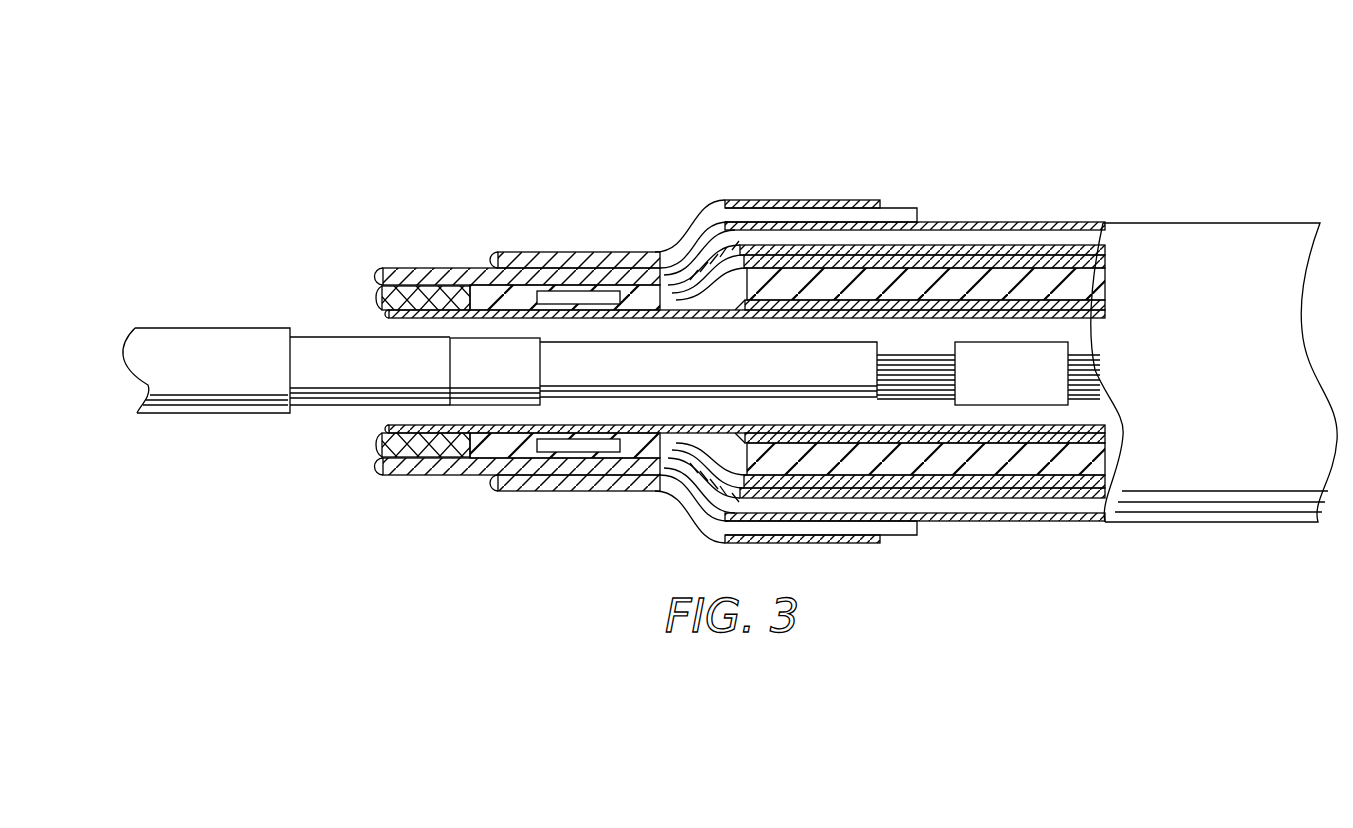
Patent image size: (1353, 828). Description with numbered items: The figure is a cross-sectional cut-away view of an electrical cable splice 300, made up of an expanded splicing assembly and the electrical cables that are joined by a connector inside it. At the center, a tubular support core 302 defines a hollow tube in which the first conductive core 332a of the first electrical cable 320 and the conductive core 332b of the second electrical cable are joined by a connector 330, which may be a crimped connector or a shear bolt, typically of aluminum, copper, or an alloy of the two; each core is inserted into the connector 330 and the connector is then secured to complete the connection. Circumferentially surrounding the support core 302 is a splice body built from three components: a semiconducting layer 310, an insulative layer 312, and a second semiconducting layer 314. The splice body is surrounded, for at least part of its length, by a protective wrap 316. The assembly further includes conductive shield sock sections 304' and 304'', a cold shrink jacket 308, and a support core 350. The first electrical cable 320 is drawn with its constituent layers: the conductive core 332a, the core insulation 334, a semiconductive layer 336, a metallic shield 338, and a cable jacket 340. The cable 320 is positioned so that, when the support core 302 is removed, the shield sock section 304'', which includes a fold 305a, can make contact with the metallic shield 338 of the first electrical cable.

The electrical cable splice 300 is at (1228, 108).
The tubular support core 302 is at (530, 302).
The conductive shield sock section 304' is at (922, 337).
The conductive shield sock section 304'' is at (518, 484).
The fold 305a is at (378, 290).
The cold shrink jacket 308 is at (865, 205).
The semiconducting layer 310 is at (598, 315).
The insulative layer 312 is at (748, 288).
The second semiconducting layer 314 is at (803, 307).
The protective wrap 316 is at (985, 255).
The first electrical cable 320 is at (131, 338).
The connector 330 is at (1057, 350).
The first conductive core 332a is at (922, 400).
The conductive core 332b is at (1088, 400).
The core insulation 334 is at (672, 362).
The semiconductive layer 336 is at (472, 350).
The metallic shield 338 is at (318, 347).
The cable jacket 340 is at (213, 347).
The support core 350 is at (905, 217).